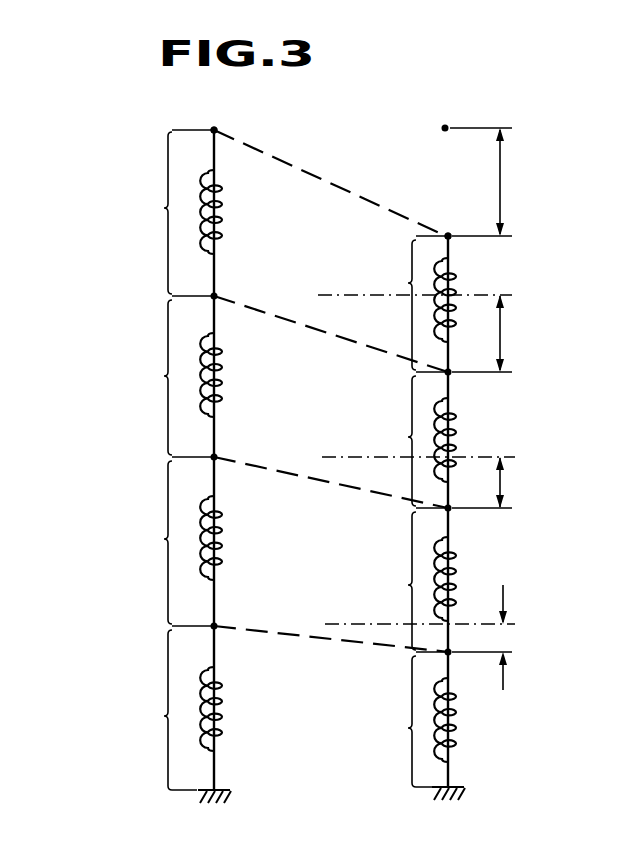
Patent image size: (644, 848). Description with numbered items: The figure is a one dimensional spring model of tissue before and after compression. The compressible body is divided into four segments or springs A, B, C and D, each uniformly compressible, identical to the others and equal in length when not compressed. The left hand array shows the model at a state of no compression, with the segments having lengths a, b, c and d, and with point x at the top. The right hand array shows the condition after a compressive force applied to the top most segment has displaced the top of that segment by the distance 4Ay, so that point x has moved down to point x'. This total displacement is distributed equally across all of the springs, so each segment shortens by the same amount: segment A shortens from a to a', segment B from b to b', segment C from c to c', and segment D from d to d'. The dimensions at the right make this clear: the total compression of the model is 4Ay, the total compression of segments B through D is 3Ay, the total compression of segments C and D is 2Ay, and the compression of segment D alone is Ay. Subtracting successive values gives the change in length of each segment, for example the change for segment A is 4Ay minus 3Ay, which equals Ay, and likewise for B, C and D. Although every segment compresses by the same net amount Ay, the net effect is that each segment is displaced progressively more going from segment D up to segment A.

The point x is at (298, 110).
The point x' is at (464, 249).
The uncompressed length of segment A a is at (152, 213).
The uncompressed length of segment B b is at (153, 377).
The uncompressed length of segment C c is at (151, 542).
The uncompressed length of segment D d is at (151, 710).
The segment or spring A is at (221, 238).
The segment or spring B is at (221, 368).
The segment or spring C is at (221, 548).
The segment or spring D is at (221, 718).
The compressed length of segment A a' is at (398, 305).
The compressed length of segment B b' is at (395, 441).
The compressed length of segment C c' is at (394, 581).
The compressed length of segment D d' is at (394, 721).
The total compression 4Δy 4Ay is at (501, 186).
The total compression 3Δy of segments B-D 3Ay is at (501, 341).
The total compression 2Δy of segments C and D 2Ay is at (501, 485).
The unit compression Δy Ay is at (509, 638).